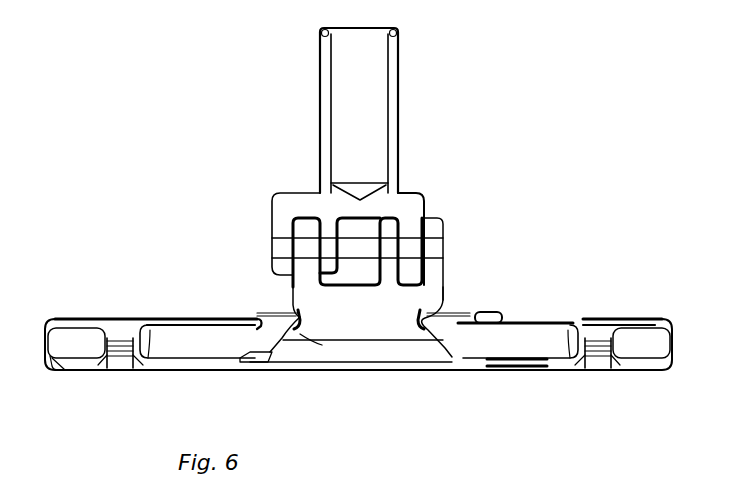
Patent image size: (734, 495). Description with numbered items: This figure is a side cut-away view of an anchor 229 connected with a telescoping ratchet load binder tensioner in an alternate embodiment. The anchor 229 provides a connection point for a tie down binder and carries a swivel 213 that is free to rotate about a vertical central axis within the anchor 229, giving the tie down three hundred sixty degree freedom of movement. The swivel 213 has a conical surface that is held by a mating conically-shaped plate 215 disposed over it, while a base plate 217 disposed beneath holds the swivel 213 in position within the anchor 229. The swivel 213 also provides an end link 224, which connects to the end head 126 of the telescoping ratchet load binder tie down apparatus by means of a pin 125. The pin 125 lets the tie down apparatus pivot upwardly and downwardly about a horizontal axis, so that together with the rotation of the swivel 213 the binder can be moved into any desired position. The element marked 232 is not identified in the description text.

The end head 126 is at (282, 193).
The pin 125 is at (288, 245).
The end link 224 is at (443, 288).
The anchor 229 is at (127, 318).
The conically-shaped plate 215 is at (270, 332).
The base plate 217 is at (233, 365).
The hub 232 is at (298, 332).
The swivel 213 is at (385, 322).